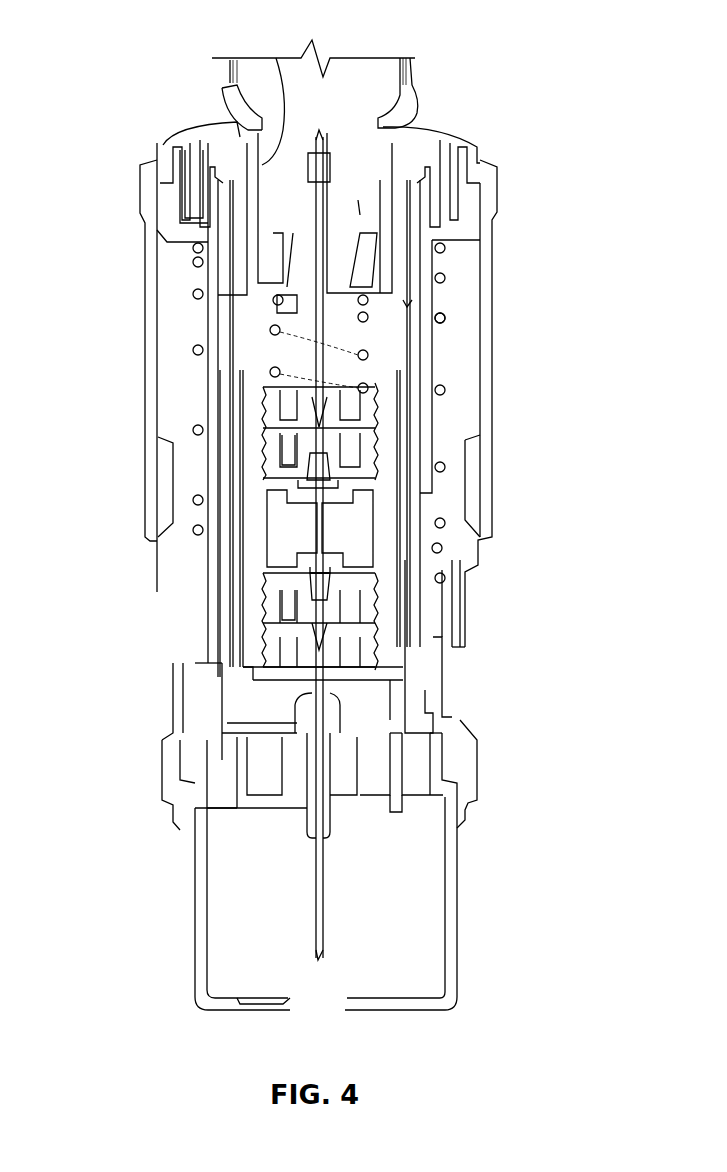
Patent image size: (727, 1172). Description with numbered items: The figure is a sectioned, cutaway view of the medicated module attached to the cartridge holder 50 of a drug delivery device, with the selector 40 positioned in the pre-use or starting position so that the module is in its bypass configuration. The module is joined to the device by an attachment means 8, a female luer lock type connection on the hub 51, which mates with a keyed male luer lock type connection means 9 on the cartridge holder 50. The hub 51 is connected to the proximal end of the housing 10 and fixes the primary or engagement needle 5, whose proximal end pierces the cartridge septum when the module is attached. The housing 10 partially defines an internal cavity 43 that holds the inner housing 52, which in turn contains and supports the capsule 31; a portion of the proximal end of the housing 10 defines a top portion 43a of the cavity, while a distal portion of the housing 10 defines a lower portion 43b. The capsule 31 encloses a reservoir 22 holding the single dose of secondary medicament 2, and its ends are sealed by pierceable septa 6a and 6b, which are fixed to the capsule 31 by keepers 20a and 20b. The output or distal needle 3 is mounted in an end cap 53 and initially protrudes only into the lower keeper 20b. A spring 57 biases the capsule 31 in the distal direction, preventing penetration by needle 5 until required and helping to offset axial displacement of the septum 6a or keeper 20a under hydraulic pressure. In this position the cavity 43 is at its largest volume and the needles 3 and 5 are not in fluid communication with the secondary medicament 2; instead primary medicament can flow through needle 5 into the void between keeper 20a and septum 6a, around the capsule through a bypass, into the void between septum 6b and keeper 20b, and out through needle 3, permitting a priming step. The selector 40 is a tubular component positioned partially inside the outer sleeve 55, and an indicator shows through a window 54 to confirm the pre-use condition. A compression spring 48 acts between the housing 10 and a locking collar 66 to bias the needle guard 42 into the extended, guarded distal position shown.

The secondary medicament 2 is at (318, 530).
The output needle 3 is at (317, 920).
The engagement needle 5 is at (230, 188).
The upper septum 6a is at (278, 472).
The lower septum 6b is at (273, 585).
The attachment means 8 is at (276, 58).
The connection means 9 is at (358, 200).
The housing 10 is at (415, 432).
The proximal keeper 20a is at (278, 423).
The lower keeper 20b is at (273, 632).
The reservoir 22 is at (370, 515).
The capsule 31 is at (383, 377).
The selector 40 is at (465, 762).
The needle guard 42 is at (198, 773).
The cavity 43 is at (403, 337).
The top portion of cavity 43a is at (407, 307).
The lower portion of cavity 43b is at (393, 710).
The compression spring 48 is at (445, 322).
The cartridge holder 50 is at (400, 58).
The hub 51 is at (446, 137).
The inner housing 52 is at (405, 665).
The end cap 53 is at (392, 803).
The window 54 is at (453, 685).
The outer sleeve 55 is at (490, 262).
The spring 57 is at (268, 330).
The locking collar 66 is at (442, 618).